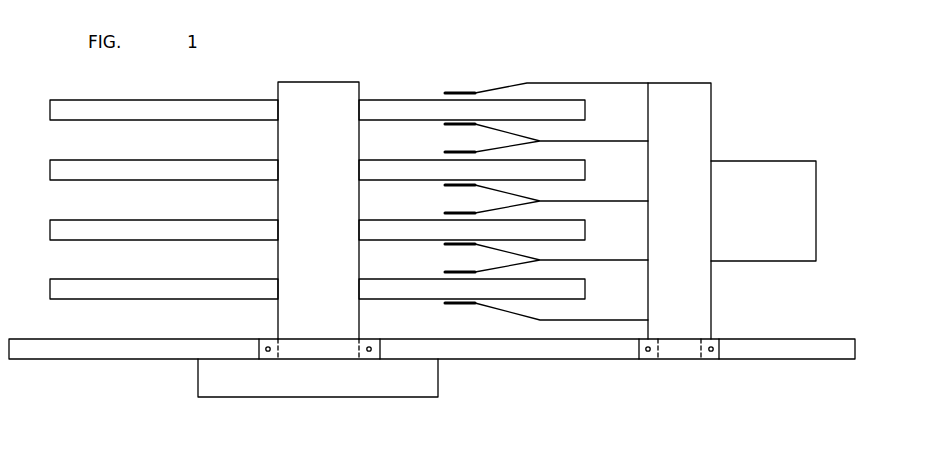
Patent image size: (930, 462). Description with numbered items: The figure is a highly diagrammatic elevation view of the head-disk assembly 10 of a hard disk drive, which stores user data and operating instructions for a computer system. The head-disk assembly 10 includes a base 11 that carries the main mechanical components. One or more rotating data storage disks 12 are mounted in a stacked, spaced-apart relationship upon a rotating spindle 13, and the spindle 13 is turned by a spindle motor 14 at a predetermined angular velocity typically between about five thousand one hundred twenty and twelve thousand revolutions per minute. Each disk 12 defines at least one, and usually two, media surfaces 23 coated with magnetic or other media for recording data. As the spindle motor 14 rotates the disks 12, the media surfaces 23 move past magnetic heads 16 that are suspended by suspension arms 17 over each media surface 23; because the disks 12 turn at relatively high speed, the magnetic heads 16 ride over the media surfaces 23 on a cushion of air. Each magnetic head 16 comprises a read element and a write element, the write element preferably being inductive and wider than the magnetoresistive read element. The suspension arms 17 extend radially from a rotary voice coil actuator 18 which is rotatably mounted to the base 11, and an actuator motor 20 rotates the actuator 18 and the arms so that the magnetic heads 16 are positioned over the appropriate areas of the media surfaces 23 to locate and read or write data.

The head-disk assembly 10 is at (143, 390).
The base 11 is at (553, 354).
The data storage disks 12 is at (100, 100).
The spindle 13 is at (302, 90).
The spindle motor 14 is at (338, 388).
The magnetic heads 16 is at (446, 93).
The suspension arms 17 is at (527, 83).
The rotary voice coil actuator 18 is at (722, 106).
The actuator motor 20 is at (760, 255).
The media surfaces 23 is at (158, 98).